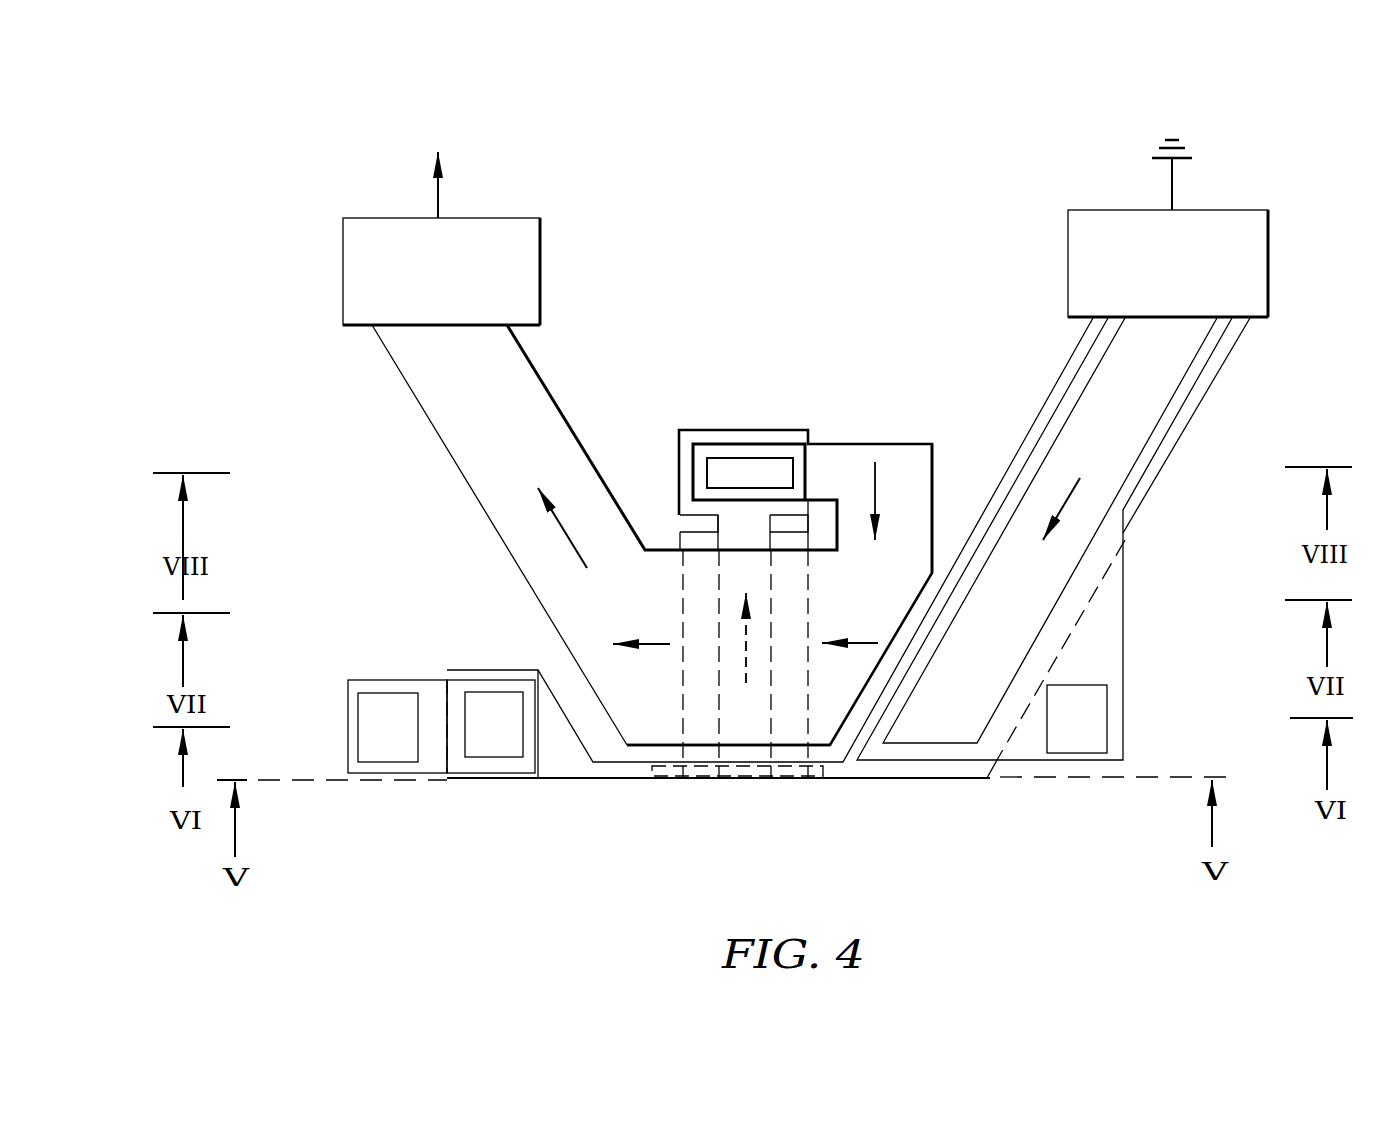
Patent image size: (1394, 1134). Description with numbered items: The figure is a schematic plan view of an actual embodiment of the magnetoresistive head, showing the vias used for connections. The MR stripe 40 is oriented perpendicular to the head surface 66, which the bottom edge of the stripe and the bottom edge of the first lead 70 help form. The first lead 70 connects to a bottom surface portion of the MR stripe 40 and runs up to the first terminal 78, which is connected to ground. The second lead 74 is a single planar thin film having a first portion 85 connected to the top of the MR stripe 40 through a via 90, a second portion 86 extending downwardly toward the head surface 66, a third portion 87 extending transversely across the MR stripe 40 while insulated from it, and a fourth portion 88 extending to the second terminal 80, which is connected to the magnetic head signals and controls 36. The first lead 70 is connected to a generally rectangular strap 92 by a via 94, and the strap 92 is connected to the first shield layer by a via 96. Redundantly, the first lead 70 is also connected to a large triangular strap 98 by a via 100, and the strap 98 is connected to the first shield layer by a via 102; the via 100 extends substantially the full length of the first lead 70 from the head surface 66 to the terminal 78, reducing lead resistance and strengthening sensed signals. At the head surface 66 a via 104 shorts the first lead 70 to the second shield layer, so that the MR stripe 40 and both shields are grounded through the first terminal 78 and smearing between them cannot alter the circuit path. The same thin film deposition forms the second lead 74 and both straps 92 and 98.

The magnetic head signals and controls 36 is at (433, 164).
The MR stripe 40 is at (757, 678).
The head surface 66 is at (670, 778).
The first lead 70 is at (558, 765).
The second lead 74 is at (563, 408).
The first terminal 78 is at (1217, 210).
The second terminal 80 is at (490, 217).
The first portion 85 is at (843, 453).
The second portion 86 is at (915, 503).
The third portion 87 is at (732, 652).
The fourth portion 88 is at (512, 528).
The via 90 is at (723, 465).
The strap 92 is at (430, 707).
The via 94 is at (495, 707).
The via 96 is at (385, 707).
The strap 98 is at (1097, 357).
The via 100 is at (1140, 408).
The via 102 is at (1095, 722).
The via 104 is at (752, 773).